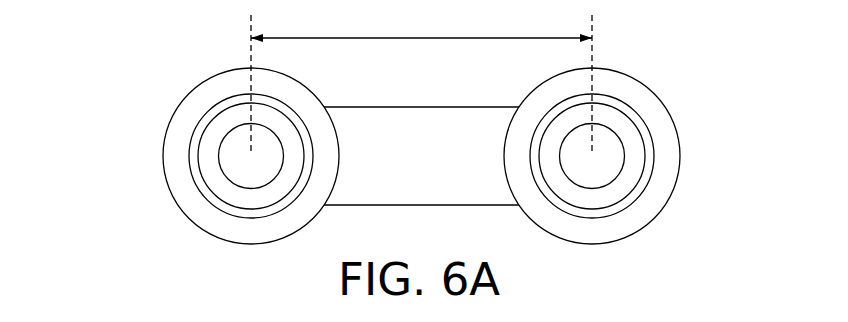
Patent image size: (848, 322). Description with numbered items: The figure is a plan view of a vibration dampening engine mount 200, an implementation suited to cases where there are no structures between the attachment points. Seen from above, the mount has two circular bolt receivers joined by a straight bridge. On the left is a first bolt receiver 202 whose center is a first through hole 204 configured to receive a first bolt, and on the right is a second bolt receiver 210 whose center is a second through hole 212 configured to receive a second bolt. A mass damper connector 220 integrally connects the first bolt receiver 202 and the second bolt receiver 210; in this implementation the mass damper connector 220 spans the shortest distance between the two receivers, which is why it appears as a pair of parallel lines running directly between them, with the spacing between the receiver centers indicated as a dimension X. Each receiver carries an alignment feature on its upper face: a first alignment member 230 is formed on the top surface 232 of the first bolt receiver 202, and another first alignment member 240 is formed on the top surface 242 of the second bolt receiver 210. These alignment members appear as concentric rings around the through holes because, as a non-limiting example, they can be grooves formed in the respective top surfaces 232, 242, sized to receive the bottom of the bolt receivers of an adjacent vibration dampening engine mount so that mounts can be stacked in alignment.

The vibration dampening engine mount 200 is at (110, 49).
The top surface 232 is at (210, 84).
The first bolt receiver 202 is at (175, 125).
The first through hole 204 is at (235, 163).
The first alignment member 230 is at (217, 202).
The mass damper connector 220 is at (429, 107).
The top surface 242 is at (636, 86).
The first alignment member 240 is at (635, 122).
The second bolt receiver 210 is at (682, 155).
The second through hole 212 is at (607, 170).